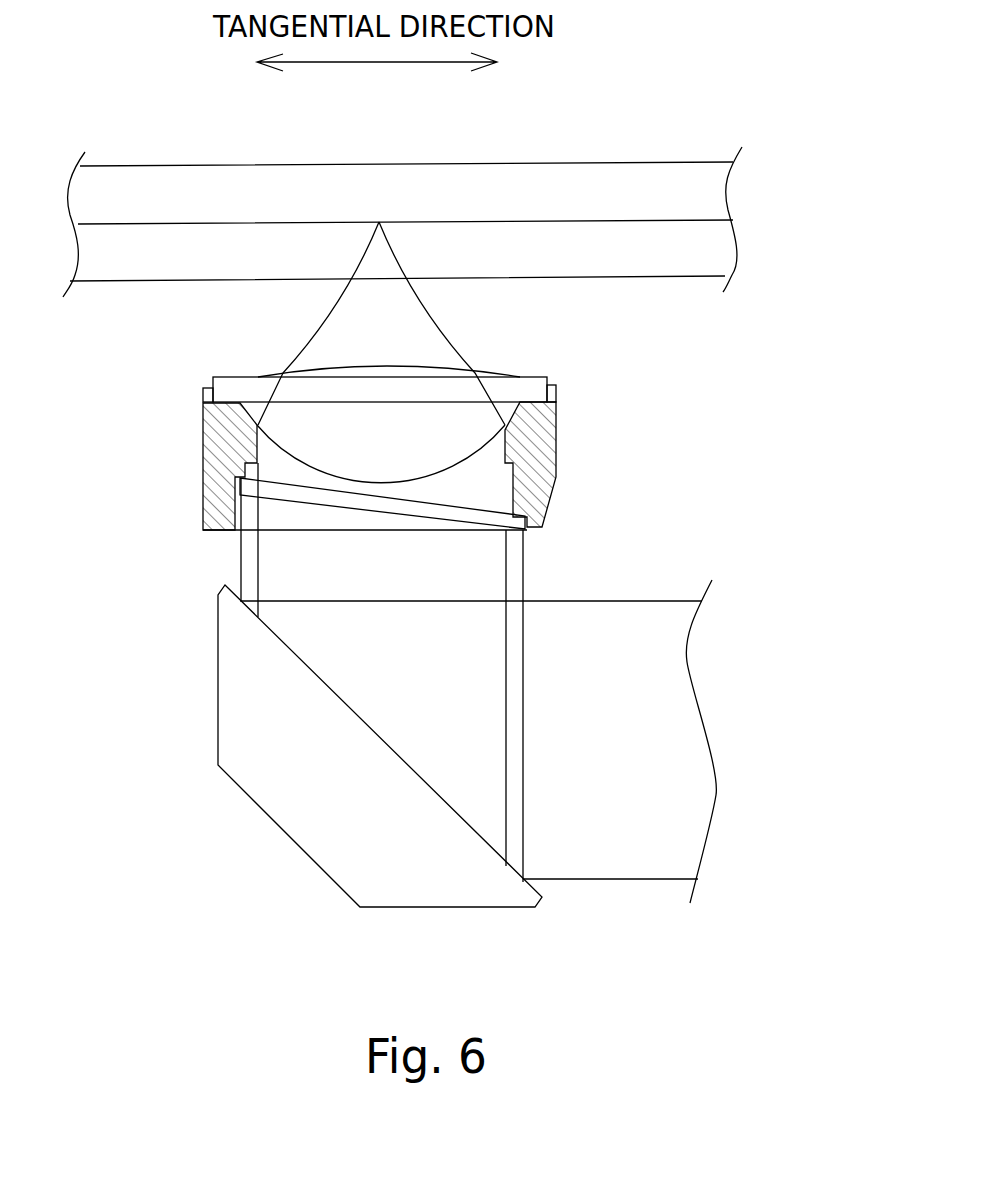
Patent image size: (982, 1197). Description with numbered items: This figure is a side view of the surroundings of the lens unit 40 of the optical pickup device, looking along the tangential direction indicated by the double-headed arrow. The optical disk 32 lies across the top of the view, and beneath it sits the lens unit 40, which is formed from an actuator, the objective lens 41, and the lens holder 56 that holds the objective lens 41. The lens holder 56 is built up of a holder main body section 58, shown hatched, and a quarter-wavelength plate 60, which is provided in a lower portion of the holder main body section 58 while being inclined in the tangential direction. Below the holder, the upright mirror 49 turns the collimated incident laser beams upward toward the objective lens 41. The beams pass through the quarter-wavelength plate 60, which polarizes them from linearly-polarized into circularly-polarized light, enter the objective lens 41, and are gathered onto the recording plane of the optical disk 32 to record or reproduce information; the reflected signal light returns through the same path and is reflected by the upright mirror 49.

The optical disk 32 is at (645, 173).
The lens unit 40 is at (592, 375).
The objective lens 41 is at (430, 420).
The upright mirror 49 is at (263, 785).
The lens holder 56 is at (185, 527).
The holder main body section 58 is at (537, 463).
The quarter-wavelength plate 60 is at (478, 517).